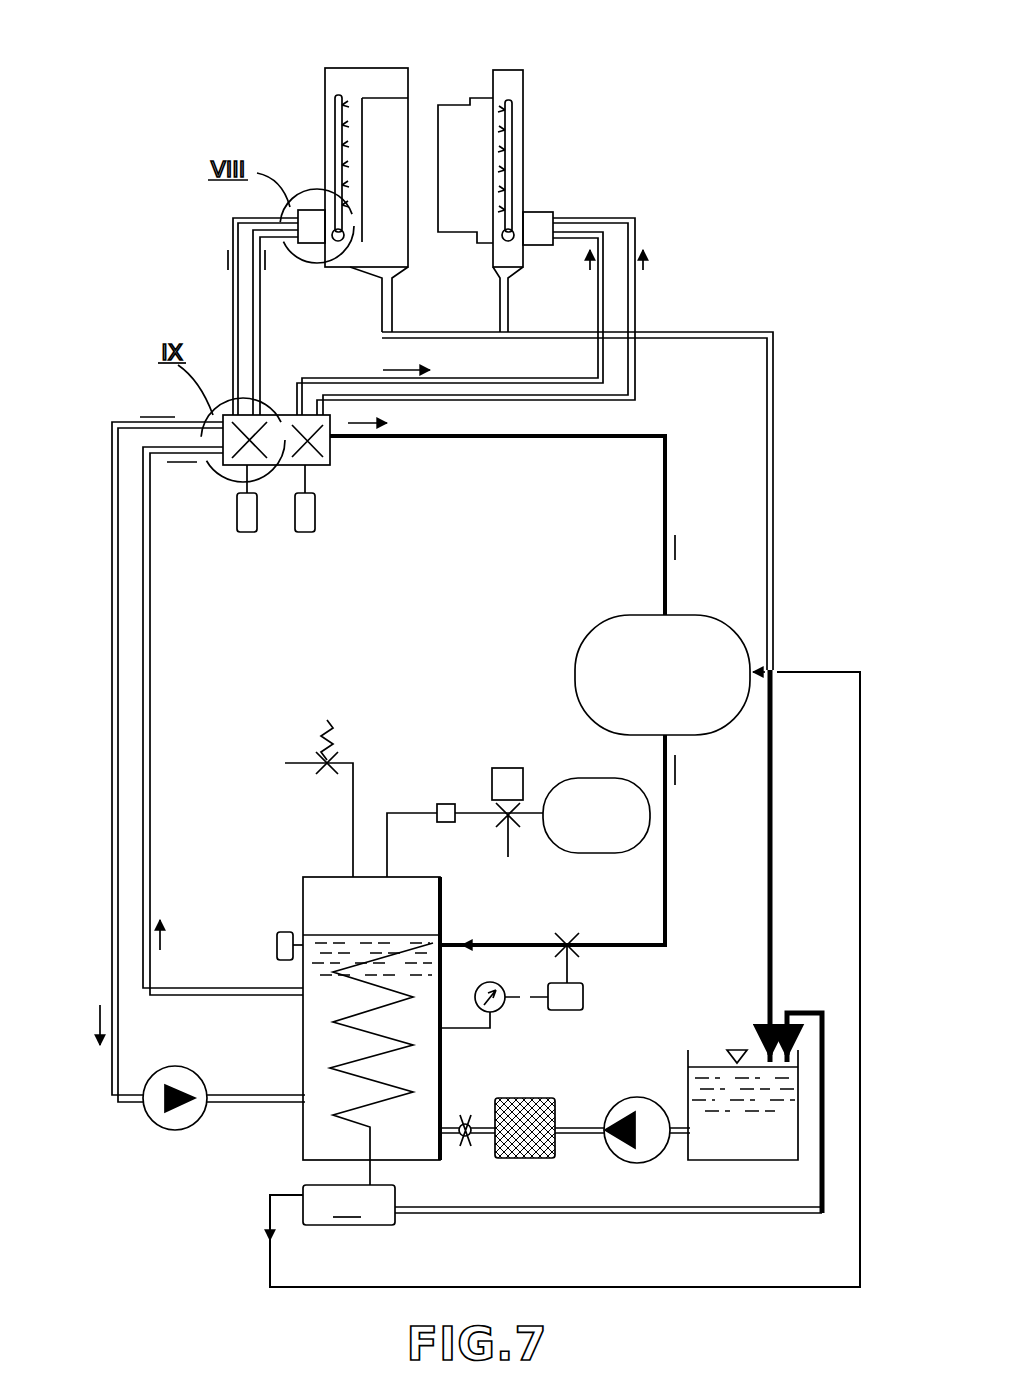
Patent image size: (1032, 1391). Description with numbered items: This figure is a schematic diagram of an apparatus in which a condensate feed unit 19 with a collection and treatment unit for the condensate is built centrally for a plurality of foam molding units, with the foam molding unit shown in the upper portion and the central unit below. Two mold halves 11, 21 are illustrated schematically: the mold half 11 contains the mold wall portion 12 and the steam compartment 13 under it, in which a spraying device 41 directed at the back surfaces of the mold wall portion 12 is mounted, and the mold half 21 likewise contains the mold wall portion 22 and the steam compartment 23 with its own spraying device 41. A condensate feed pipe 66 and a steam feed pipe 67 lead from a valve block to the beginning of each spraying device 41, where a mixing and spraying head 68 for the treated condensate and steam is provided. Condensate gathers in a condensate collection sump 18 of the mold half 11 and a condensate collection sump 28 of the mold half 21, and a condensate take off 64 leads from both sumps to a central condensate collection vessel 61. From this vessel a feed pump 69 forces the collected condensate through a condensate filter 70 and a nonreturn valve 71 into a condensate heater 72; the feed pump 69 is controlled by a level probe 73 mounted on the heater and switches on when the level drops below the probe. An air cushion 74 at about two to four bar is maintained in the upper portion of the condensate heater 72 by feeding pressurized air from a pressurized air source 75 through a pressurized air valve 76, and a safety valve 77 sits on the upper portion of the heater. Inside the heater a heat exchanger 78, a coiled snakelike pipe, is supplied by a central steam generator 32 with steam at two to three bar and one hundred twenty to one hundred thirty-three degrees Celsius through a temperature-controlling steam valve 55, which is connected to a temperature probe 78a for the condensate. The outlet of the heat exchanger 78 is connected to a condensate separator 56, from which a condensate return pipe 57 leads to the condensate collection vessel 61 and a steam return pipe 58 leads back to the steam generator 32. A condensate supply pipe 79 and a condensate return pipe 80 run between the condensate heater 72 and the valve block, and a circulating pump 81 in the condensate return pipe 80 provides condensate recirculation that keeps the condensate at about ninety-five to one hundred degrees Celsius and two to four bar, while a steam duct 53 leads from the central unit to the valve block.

The mold half 11 is at (312, 97).
The mold wall portion 12 is at (365, 127).
The steam compartment 13 is at (335, 75).
The condensate collection sump 18 is at (378, 273).
The condensate feed unit 19 is at (242, 1136).
The mold half 21 is at (585, 96).
The mold wall portion 22 is at (457, 107).
The steam compartment 23 is at (510, 90).
The condensate collection sump 28 is at (505, 275).
The steam generator 32 is at (577, 660).
The spraying device 41 is at (338, 138).
The steam duct 53 is at (672, 470).
The steam valve 55 is at (568, 932).
The condensate separator 56 is at (349, 1205).
The condensate return pipe 57 is at (678, 1208).
The steam return pipe 58 is at (862, 818).
The condensate collection vessel 61 is at (718, 1093).
The condensate take off 64 is at (735, 335).
The condensate feed pipe 66 is at (233, 333).
The steam feed pipe 67 is at (262, 337).
The mixing and spraying head 68 is at (538, 217).
The feed pump 69 is at (648, 1110).
The condensate filter 70 is at (537, 1098).
The nonreturn valve 71 is at (465, 1120).
The condensate heater 72 is at (313, 1132).
The level probe 73 is at (277, 938).
The air cushion 74 is at (432, 890).
The pressurized air source 75 is at (580, 782).
The pressurized air valve 76 is at (465, 830).
The safety valve 77 is at (327, 773).
The heat exchanger 78 is at (313, 1048).
The temperature probe 78a is at (507, 1010).
The condensate supply pipe 79 is at (150, 745).
The condensate return pipe 80 is at (112, 742).
The circulating pump 81 is at (155, 1107).